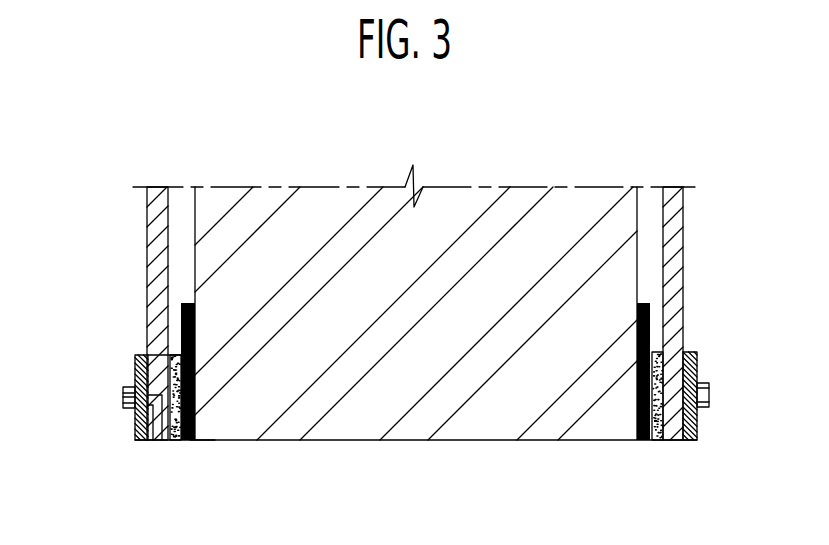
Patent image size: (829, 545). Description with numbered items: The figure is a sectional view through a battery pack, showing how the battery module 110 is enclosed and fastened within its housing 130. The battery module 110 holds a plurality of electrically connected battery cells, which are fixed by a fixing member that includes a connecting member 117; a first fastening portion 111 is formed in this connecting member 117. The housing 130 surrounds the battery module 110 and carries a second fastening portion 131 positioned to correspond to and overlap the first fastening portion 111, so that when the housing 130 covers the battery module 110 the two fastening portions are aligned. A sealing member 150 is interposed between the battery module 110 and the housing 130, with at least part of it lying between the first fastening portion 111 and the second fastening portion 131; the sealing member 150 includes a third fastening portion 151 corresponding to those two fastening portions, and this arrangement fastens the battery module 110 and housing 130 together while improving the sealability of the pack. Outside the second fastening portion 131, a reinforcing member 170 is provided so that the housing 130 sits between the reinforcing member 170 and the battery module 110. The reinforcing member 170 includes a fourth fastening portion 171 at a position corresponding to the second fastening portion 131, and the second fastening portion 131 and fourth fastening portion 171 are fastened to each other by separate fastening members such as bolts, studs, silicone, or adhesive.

The battery module 110 is at (532, 197).
The first fastening portion 111 is at (200, 441).
The connecting member 117 is at (643, 441).
The housing 130 is at (157, 192).
The second fastening portion 131 is at (162, 422).
The sealing member 150 is at (175, 366).
The third fastening portion 151 is at (178, 441).
The reinforcing member 170 is at (137, 371).
The fourth fastening portion 171 is at (135, 441).